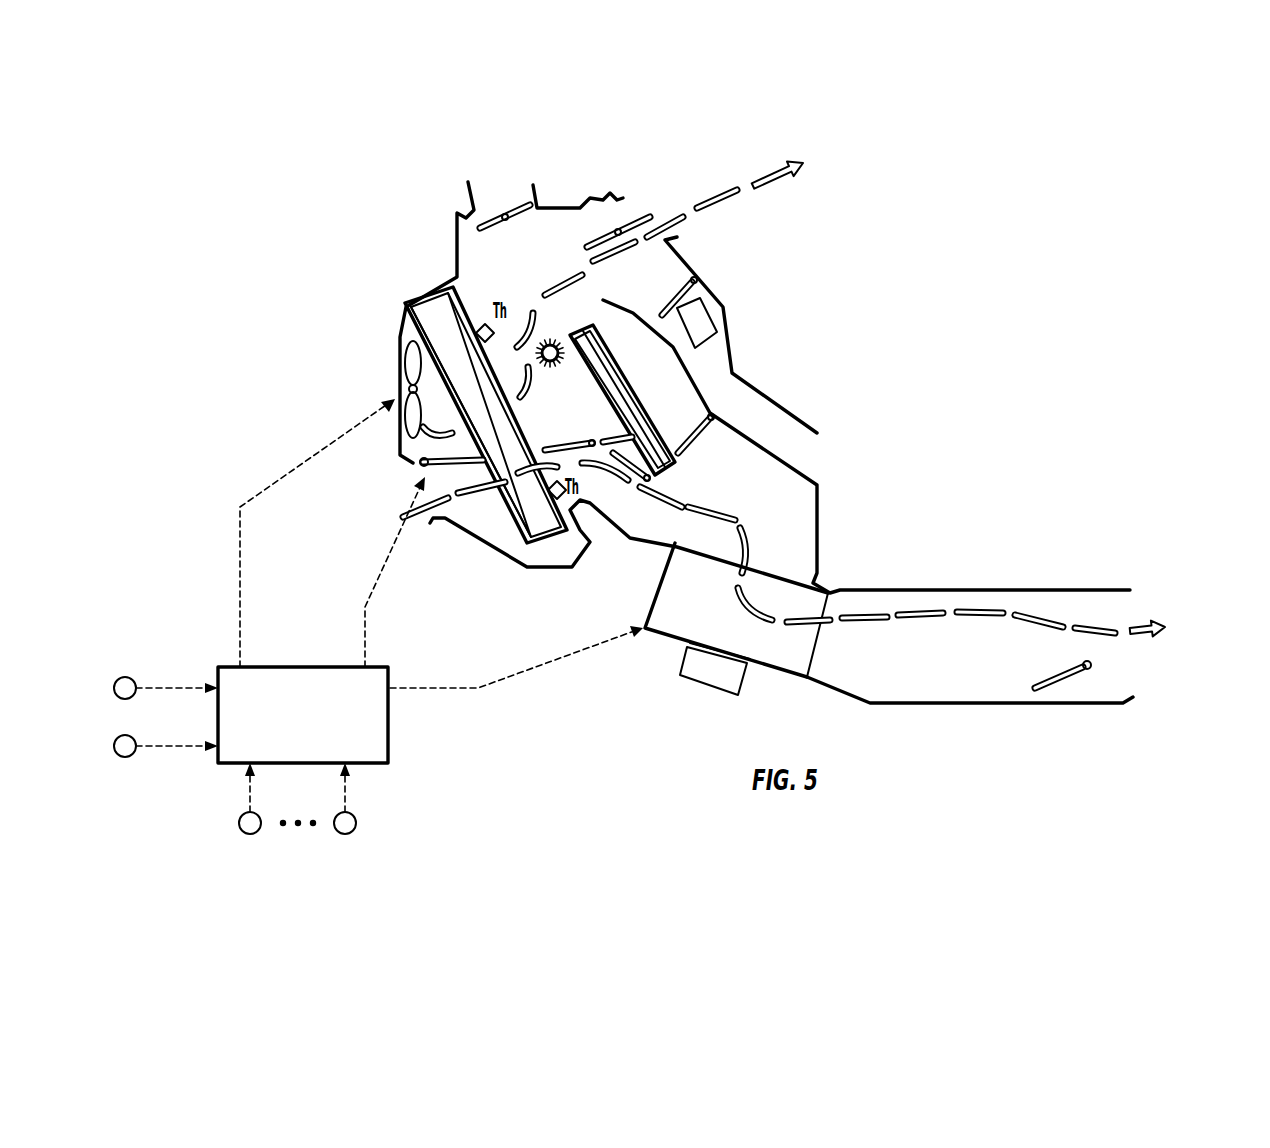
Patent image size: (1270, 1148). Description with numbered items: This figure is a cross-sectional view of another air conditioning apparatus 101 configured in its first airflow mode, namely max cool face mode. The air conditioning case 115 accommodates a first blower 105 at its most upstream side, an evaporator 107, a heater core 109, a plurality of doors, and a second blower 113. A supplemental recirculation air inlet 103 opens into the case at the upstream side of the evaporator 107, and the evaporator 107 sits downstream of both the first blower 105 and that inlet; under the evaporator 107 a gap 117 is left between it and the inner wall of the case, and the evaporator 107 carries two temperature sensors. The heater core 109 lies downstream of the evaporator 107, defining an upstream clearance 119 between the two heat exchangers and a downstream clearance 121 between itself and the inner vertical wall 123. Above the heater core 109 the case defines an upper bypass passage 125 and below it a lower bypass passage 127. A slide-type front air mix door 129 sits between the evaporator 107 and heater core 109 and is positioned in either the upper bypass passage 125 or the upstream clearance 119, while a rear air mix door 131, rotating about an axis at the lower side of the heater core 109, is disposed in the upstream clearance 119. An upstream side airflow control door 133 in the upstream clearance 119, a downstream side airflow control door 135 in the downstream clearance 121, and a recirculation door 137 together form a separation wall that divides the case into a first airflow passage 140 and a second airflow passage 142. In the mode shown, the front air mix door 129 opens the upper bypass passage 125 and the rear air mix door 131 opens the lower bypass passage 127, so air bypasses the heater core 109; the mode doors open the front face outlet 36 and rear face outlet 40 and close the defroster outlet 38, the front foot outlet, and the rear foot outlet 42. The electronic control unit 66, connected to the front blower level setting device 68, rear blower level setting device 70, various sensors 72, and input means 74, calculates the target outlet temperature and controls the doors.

The front face outlet 36 is at (623, 198).
The defroster outlet 38 is at (477, 203).
The rear face outlet 40 is at (1123, 590).
The rear foot outlet 42 is at (1110, 705).
The electronic control unit 66 is at (390, 747).
The front blower level setting device 68 is at (114, 683).
The rear blower level setting device 70 is at (114, 741).
The sensors 72 is at (250, 834).
The input means 74 is at (345, 834).
The air conditioning apparatus 101 is at (853, 292).
The supplemental recirculation air inlet 103 is at (440, 520).
The first blower 105 is at (395, 362).
The evaporator 107 is at (435, 302).
The heater core 109 is at (577, 330).
The second blower 113 is at (675, 615).
The air conditioning case 115 is at (775, 400).
The gap 117 is at (629, 546).
The upstream clearance 119 is at (571, 398).
The downstream clearance 121 is at (694, 418).
The inner vertical wall 123 is at (653, 348).
The upper bypass passage 125 is at (522, 289).
The lower bypass passage 127 is at (676, 536).
The front air mix door 129 is at (590, 392).
The rear air mix door 131 is at (643, 478).
The upstream side airflow control door 133 is at (500, 483).
The downstream side airflow control door 135 is at (700, 440).
The recirculation door 137 is at (450, 466).
The first airflow passage 140 is at (576, 426).
The second airflow passage 142 is at (627, 512).